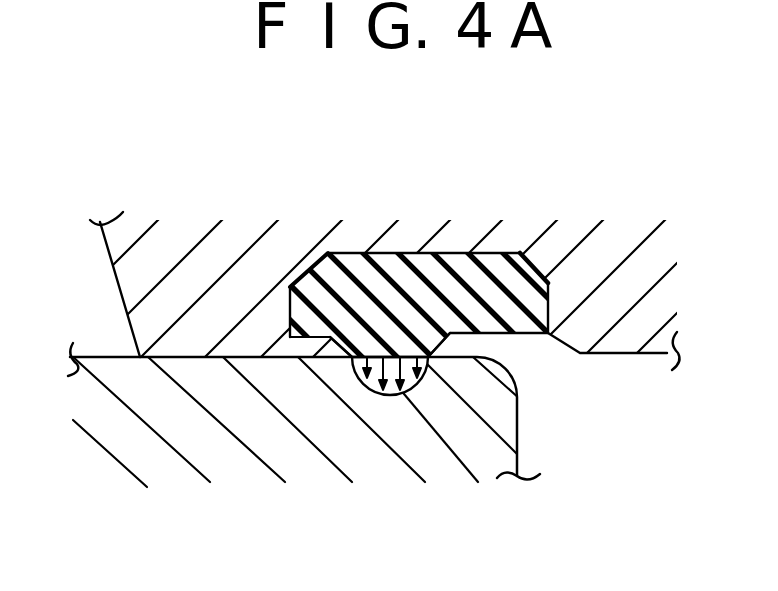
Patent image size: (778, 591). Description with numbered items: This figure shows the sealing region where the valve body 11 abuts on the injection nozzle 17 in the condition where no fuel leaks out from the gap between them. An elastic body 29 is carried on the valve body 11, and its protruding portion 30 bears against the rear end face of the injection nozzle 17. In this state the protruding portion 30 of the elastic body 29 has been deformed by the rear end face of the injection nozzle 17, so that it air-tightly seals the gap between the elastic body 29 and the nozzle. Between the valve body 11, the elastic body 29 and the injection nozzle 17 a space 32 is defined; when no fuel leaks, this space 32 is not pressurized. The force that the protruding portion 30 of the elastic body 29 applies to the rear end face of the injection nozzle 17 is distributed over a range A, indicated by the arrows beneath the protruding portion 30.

The valve body 11 is at (255, 263).
The elastic body 29 is at (446, 283).
The protruding portion 30 is at (430, 344).
The space 32 is at (298, 348).
The injection nozzle 17 is at (178, 422).
The range A is at (400, 392).